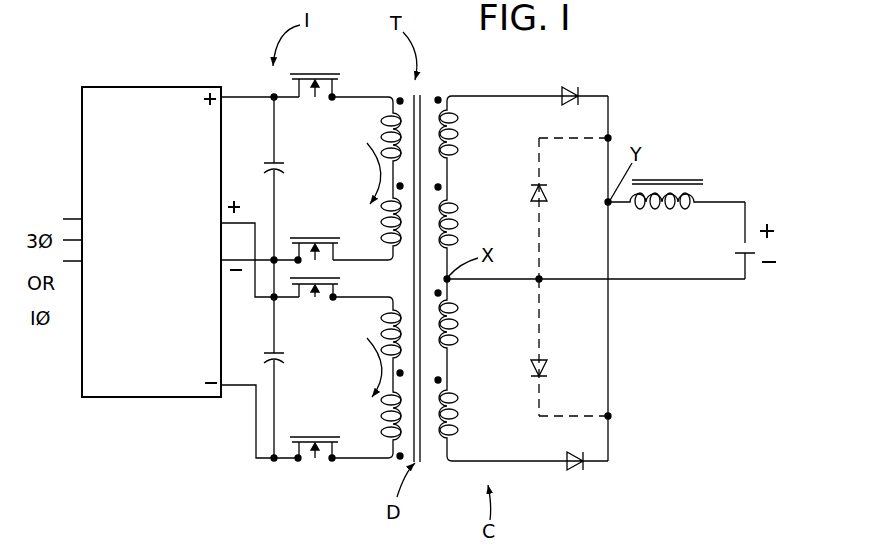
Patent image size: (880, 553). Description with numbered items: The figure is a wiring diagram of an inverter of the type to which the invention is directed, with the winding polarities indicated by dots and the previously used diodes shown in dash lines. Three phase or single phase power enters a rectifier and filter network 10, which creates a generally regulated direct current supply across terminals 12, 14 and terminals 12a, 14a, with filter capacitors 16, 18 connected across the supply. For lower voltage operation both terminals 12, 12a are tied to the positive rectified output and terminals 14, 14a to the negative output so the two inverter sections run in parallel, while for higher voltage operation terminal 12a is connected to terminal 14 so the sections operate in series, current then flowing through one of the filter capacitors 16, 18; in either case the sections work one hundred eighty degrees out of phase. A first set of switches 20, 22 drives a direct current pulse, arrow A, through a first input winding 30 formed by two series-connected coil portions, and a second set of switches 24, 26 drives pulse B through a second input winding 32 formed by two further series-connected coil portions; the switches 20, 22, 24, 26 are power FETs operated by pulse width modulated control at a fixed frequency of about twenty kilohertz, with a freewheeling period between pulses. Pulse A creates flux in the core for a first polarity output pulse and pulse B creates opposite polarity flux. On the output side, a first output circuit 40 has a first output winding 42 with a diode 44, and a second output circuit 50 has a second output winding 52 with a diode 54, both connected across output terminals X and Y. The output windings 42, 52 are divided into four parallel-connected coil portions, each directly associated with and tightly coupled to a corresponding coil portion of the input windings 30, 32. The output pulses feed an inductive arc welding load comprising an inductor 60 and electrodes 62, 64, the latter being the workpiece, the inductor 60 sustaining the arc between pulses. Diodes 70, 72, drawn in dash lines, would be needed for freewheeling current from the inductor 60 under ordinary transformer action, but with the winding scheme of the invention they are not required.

The rectifier and filter network 10 is at (153, 88).
The terminal 12 is at (222, 96).
The terminal 12a is at (222, 221).
The terminal 14 is at (220, 264).
The terminal 14a is at (222, 387).
The filter capacitor 16 is at (266, 164).
The filter capacitor 18 is at (284, 357).
The switch 20 is at (317, 72).
The switch 22 is at (308, 236).
The switch 24 is at (330, 278).
The switch 26 is at (322, 456).
The first input winding 30 is at (381, 145).
The second input winding 32 is at (383, 340).
The first output circuit 40 is at (498, 164).
The first output winding 42 is at (455, 167).
The diode 44 is at (571, 87).
The second output circuit 50 is at (505, 405).
The second output winding 52 is at (457, 363).
The diode 54 is at (575, 468).
The inductor 60 is at (680, 178).
The electrode 62 is at (747, 240).
The electrode 64 is at (741, 253).
The diode 70 is at (546, 199).
The diode 72 is at (545, 366).